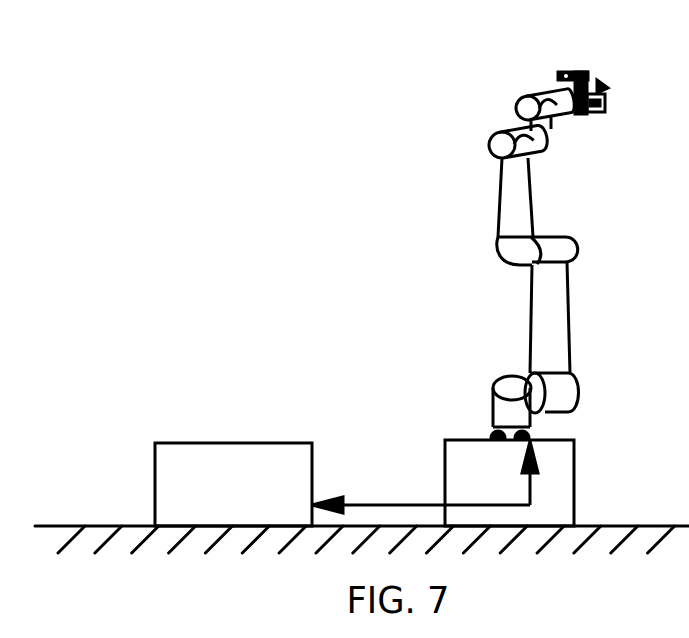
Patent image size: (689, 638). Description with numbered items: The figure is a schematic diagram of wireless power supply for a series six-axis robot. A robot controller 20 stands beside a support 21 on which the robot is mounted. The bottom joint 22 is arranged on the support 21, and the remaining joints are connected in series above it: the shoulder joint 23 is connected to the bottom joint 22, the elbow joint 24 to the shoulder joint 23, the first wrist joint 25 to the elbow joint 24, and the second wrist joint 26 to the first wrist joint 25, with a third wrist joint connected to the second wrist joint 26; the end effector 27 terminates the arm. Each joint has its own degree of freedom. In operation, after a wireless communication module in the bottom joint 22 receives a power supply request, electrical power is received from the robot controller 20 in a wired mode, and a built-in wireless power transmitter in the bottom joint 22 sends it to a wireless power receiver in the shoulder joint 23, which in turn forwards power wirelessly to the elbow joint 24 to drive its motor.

The robot controller 20 is at (227, 440).
The support 21 is at (575, 485).
The bottom joint 22 is at (488, 397).
The shoulder joint 23 is at (590, 373).
The elbow joint 24 is at (575, 248).
The first wrist joint 25 is at (490, 138).
The second wrist joint 26 is at (563, 150).
The end effector / gripper 27 is at (522, 98).